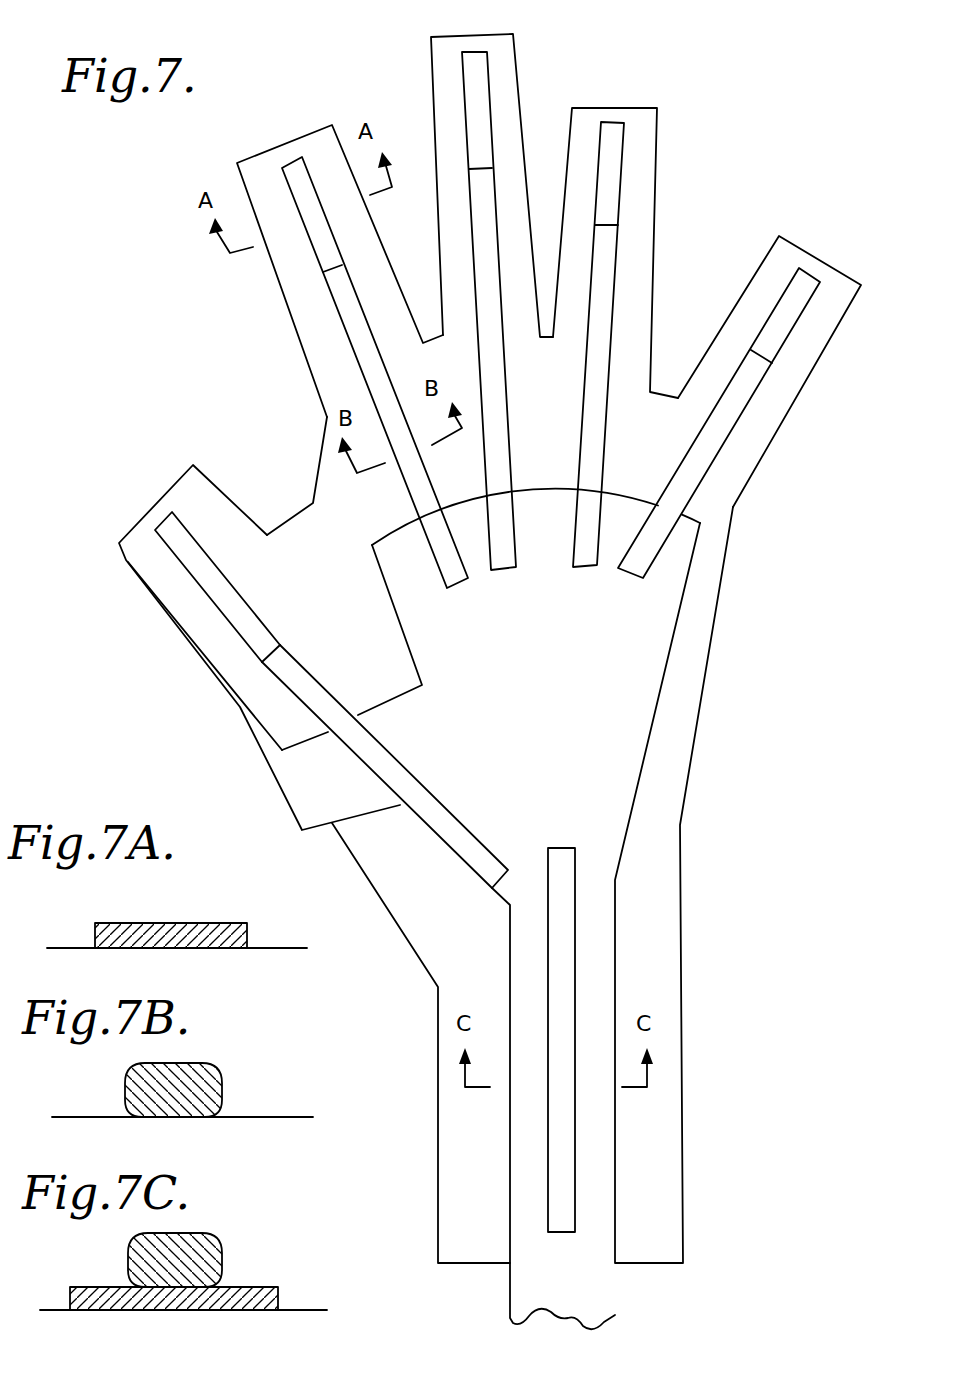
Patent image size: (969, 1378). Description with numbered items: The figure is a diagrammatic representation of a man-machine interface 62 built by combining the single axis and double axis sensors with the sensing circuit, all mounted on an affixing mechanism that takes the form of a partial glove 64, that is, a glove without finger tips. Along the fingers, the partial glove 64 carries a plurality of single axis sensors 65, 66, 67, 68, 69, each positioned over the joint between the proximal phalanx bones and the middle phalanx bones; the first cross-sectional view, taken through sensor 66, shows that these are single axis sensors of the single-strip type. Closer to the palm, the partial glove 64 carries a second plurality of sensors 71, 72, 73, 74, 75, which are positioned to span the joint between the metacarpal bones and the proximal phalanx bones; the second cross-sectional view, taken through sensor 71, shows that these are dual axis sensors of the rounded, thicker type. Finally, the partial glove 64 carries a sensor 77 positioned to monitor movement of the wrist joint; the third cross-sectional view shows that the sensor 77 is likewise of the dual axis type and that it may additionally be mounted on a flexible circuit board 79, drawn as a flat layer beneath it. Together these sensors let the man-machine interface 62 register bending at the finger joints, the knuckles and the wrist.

In FIG. 7, the man-machine interface 62 is at (193, 406).
In FIG. 7, the partial glove 64 is at (183, 492).
In FIG. 7, the single axis sensor 65 is at (212, 573).
In FIG. 7, the single axis sensor 66 is at (317, 238).
In FIG. 7A, the single axis sensor 66 is at (168, 922).
In FIG. 7, the single axis sensor 67 is at (475, 110).
In FIG. 7, the single axis sensor 68 is at (608, 175).
In FIG. 7, the single axis sensor 69 is at (807, 283).
In FIG. 7, the dual axis sensor 71 is at (362, 345).
In FIG. 7B, the dual axis sensor 71 is at (195, 1067).
In FIG. 7, the dual axis sensor 72 is at (490, 360).
In FIG. 7, the dual axis sensor 73 is at (598, 368).
In FIG. 7, the dual axis sensor 74 is at (705, 450).
In FIG. 7, the dual axis sensor 75 is at (397, 770).
In FIG. 7, the wrist sensor 77 is at (555, 968).
In FIG. 7C, the wrist sensor 77 is at (192, 1237).
In FIG. 7C, the flexible circuit board 79 is at (268, 1287).